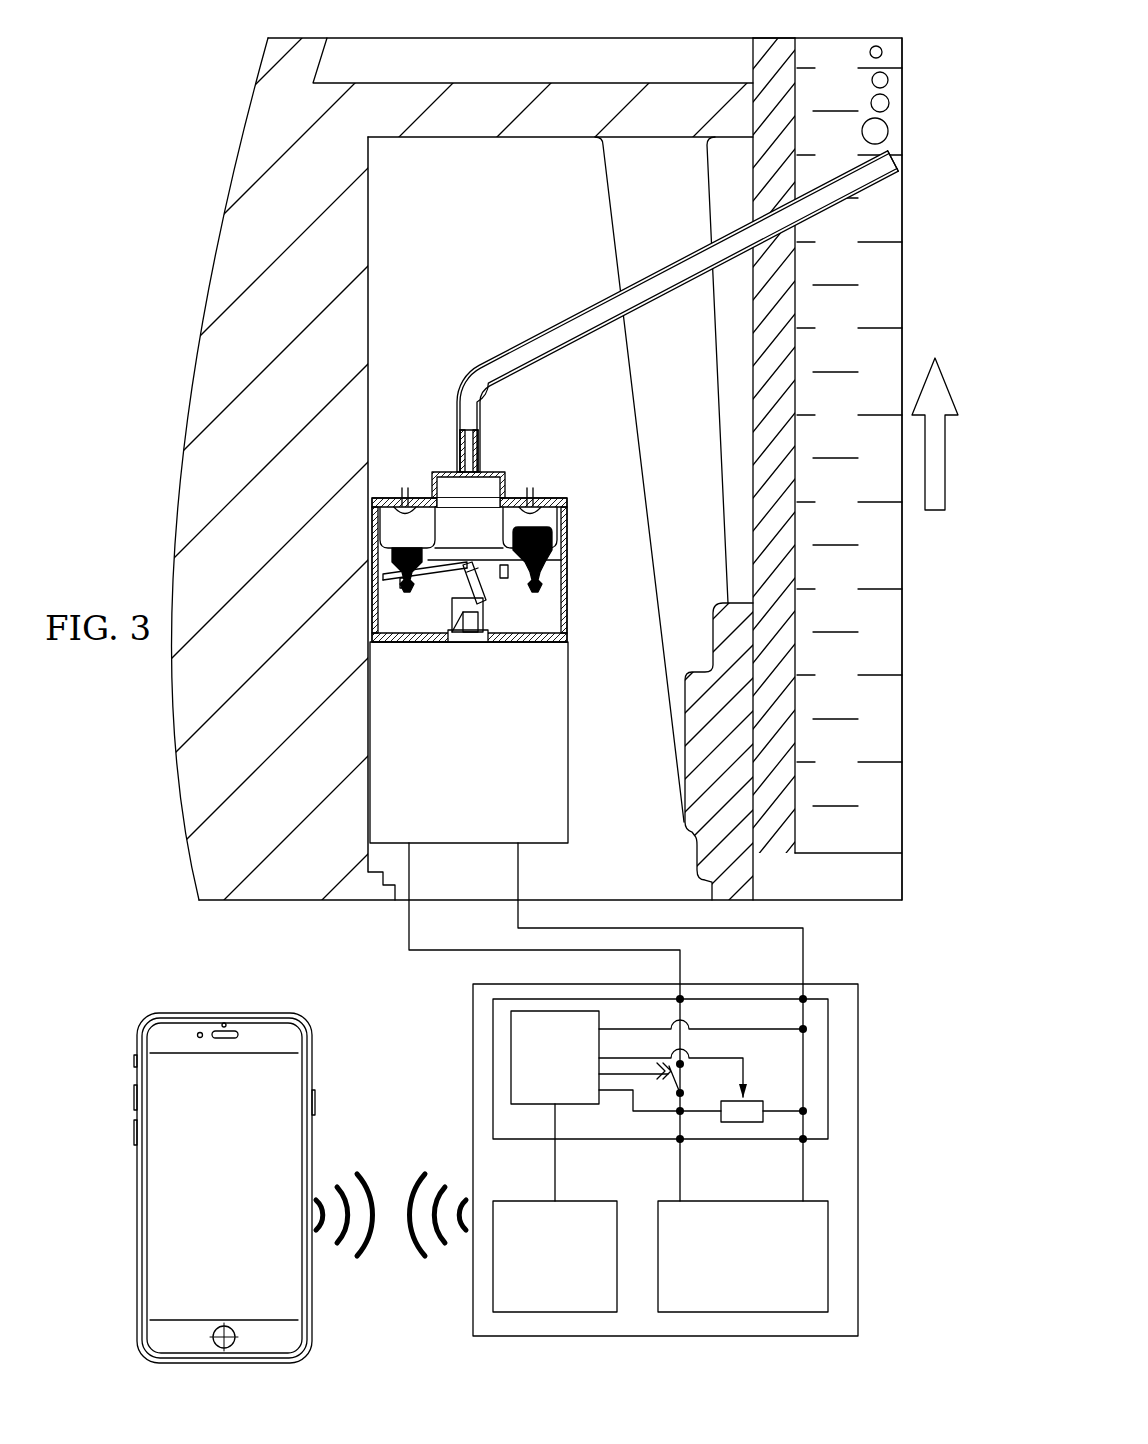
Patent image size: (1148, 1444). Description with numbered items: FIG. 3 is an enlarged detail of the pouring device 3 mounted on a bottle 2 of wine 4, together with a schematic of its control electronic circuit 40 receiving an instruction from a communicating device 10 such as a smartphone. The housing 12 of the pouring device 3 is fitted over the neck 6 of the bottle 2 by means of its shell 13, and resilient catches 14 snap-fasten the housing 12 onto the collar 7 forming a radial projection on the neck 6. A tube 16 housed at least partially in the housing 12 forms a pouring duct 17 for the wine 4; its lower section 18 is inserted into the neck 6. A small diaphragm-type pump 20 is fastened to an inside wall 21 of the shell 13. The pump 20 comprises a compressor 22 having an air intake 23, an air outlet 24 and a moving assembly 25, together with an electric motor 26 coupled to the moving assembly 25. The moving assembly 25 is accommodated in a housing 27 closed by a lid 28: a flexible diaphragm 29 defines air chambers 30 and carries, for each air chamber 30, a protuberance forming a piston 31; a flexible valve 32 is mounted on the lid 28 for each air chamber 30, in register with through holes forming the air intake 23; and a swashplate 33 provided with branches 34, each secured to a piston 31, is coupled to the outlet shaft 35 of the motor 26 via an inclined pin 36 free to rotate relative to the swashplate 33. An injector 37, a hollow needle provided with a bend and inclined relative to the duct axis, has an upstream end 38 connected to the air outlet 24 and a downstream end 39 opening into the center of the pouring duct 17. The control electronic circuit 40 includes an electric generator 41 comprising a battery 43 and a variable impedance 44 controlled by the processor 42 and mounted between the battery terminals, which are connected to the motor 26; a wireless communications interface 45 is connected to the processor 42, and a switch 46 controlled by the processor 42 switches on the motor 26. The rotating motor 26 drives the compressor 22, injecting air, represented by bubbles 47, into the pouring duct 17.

The bottle 2 is at (780, 727).
The pouring device 3 is at (163, 374).
The wine 4 is at (882, 627).
The neck 6 is at (715, 600).
The collar 7 is at (780, 727).
The communicating device 10 is at (208, 1013).
The housing 12 is at (230, 156).
The shell 13 is at (233, 240).
The resilient catches 14 is at (661, 479).
The tube 16 is at (752, 55).
The pouring duct 17 is at (830, 50).
The lower section 18 is at (760, 290).
The pump 20 is at (501, 742).
The inside wall 21 is at (372, 328).
The compressor 22 is at (501, 564).
The air intake 23 is at (534, 506).
The air outlet 24 is at (466, 448).
The moving assembly 25 is at (549, 577).
The electric motor 26 is at (469, 742).
The housing 27 is at (567, 628).
The lid 28 is at (566, 505).
The flexible diaphragm 29 is at (380, 543).
The air chambers 30 is at (512, 524).
The piston 31 is at (538, 556).
The flexible valve 32 is at (532, 497).
The swashplate 33 is at (441, 580).
The branches 34 is at (498, 566).
The outlet shaft 35 is at (483, 620).
The inclined pin 36 is at (479, 592).
The injector 37 is at (678, 311).
The upstream end 38 is at (480, 422).
The downstream end 39 is at (856, 168).
The control electronic circuit 40 is at (627, 1160).
The electric generator 41 is at (722, 1197).
The processor 42 is at (555, 1057).
The battery 43 is at (757, 1213).
The variable impedance 44 is at (760, 1125).
The wireless communications interface 45 is at (555, 1256).
The switch 46 is at (668, 1092).
The bubbles 47 is at (876, 131).